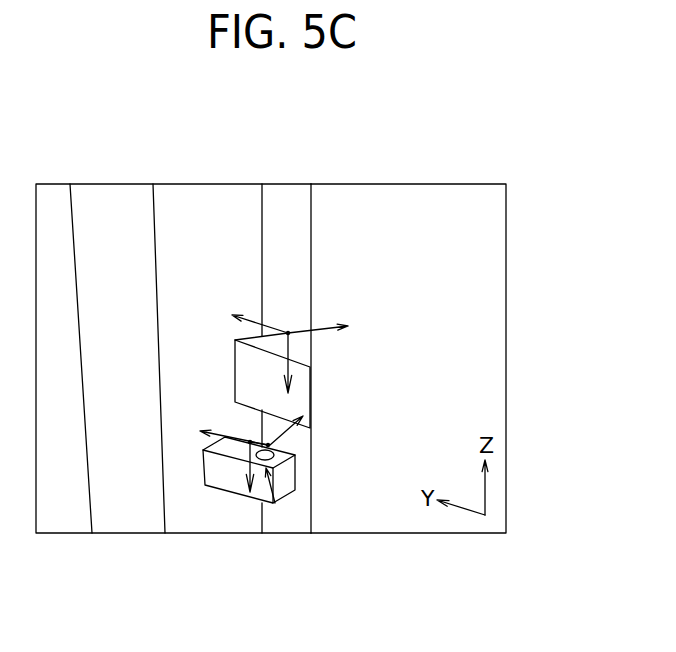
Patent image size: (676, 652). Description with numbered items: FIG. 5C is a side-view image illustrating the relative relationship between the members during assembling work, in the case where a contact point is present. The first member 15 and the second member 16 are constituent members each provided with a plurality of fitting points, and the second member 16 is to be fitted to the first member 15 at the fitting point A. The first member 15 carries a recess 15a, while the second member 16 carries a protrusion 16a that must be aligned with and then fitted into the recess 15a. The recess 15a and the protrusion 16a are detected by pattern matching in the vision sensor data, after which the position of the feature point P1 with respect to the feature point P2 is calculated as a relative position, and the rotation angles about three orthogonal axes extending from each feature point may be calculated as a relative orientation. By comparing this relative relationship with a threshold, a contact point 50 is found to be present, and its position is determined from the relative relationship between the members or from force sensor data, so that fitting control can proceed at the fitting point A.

The first member 15 is at (189, 222).
The second member 16 is at (428, 222).
The recess 15a is at (225, 478).
The protrusion 16a is at (300, 398).
The contact point 50 is at (282, 439).
The feature point P1 is at (250, 442).
The feature point P2 is at (288, 333).
The fitting point A is at (275, 503).